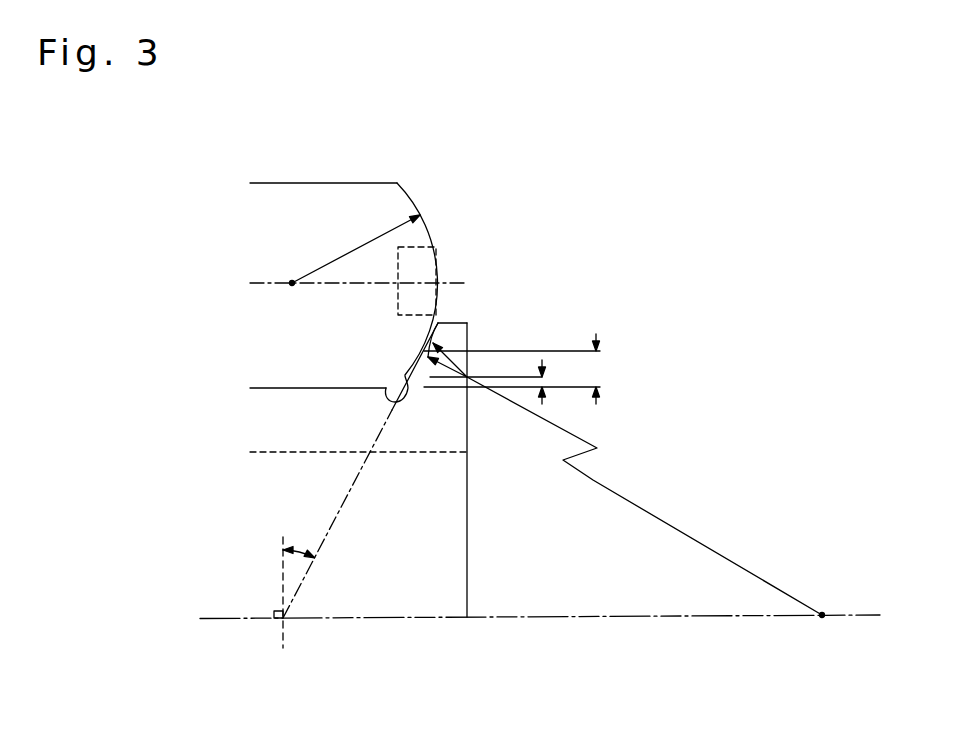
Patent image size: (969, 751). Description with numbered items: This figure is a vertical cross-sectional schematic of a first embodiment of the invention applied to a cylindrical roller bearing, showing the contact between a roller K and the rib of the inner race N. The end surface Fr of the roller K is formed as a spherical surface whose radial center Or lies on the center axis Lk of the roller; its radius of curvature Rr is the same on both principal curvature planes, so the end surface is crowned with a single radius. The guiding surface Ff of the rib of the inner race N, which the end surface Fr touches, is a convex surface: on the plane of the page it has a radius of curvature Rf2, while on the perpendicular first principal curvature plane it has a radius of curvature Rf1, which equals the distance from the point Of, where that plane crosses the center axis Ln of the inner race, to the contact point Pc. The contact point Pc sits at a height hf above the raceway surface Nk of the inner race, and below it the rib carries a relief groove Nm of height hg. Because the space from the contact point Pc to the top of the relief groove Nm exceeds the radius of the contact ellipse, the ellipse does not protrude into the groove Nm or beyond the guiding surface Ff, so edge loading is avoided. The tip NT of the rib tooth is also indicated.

The roller K is at (342, 194).
The end surface of the roller Fr is at (425, 218).
The radius of curvature of the end surface of the roller Rr is at (356, 249).
The radial center Or is at (293, 298).
The center axis of the roller Lk is at (273, 283).
The raceway surface of the inner race Nk is at (288, 389).
The relief groove Nm is at (407, 392).
The contact point Pc is at (424, 355).
The apex Ap is at (343, 491).
The center axis of inner race Ln is at (557, 617).
The inner race N is at (468, 580).
The tooth tip NT is at (461, 338).
The guiding surface of the rib Ff is at (436, 330).
The radius of curvature of the guiding surface on the second principal curvature pla Rf2 is at (450, 362).
The height of the contact point hf is at (521, 369).
The height of the relief groove hg is at (502, 382).
The radius of curvature of the guiding surface on the first principal curvature plan Rf1 is at (682, 647).
The point where the first principal curvature plane crosses the center axis of inner Of is at (820, 631).